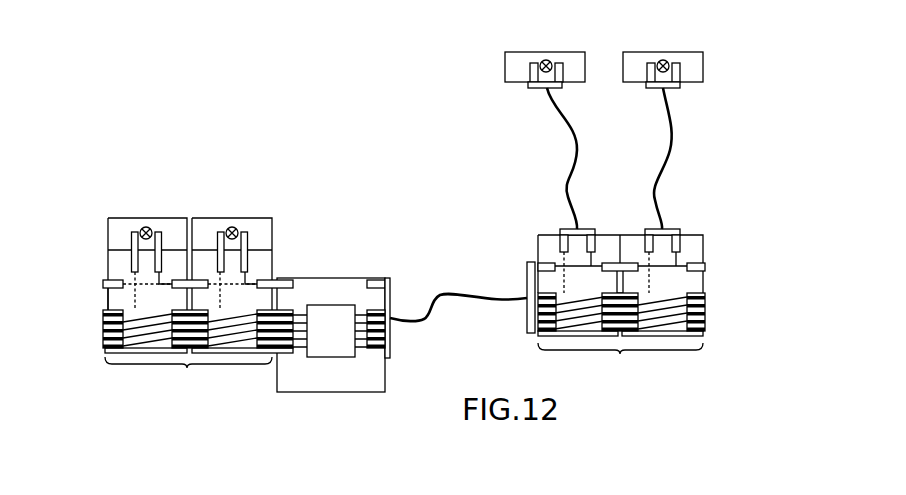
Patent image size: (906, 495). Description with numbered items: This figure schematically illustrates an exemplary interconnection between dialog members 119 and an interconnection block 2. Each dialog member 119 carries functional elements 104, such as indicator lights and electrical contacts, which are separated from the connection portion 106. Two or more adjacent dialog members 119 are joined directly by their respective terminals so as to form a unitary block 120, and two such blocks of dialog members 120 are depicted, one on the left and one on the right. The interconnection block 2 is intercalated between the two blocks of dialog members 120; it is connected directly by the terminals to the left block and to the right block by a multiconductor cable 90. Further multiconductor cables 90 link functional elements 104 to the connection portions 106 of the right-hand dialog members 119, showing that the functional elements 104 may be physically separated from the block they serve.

The interconnection block 2 is at (349, 378).
The multiconductor cable 90 is at (476, 300).
The functional elements 104 is at (112, 223).
The connection portion 106 is at (112, 302).
The dialog members 119 is at (112, 268).
The unitary block 120 is at (185, 366).